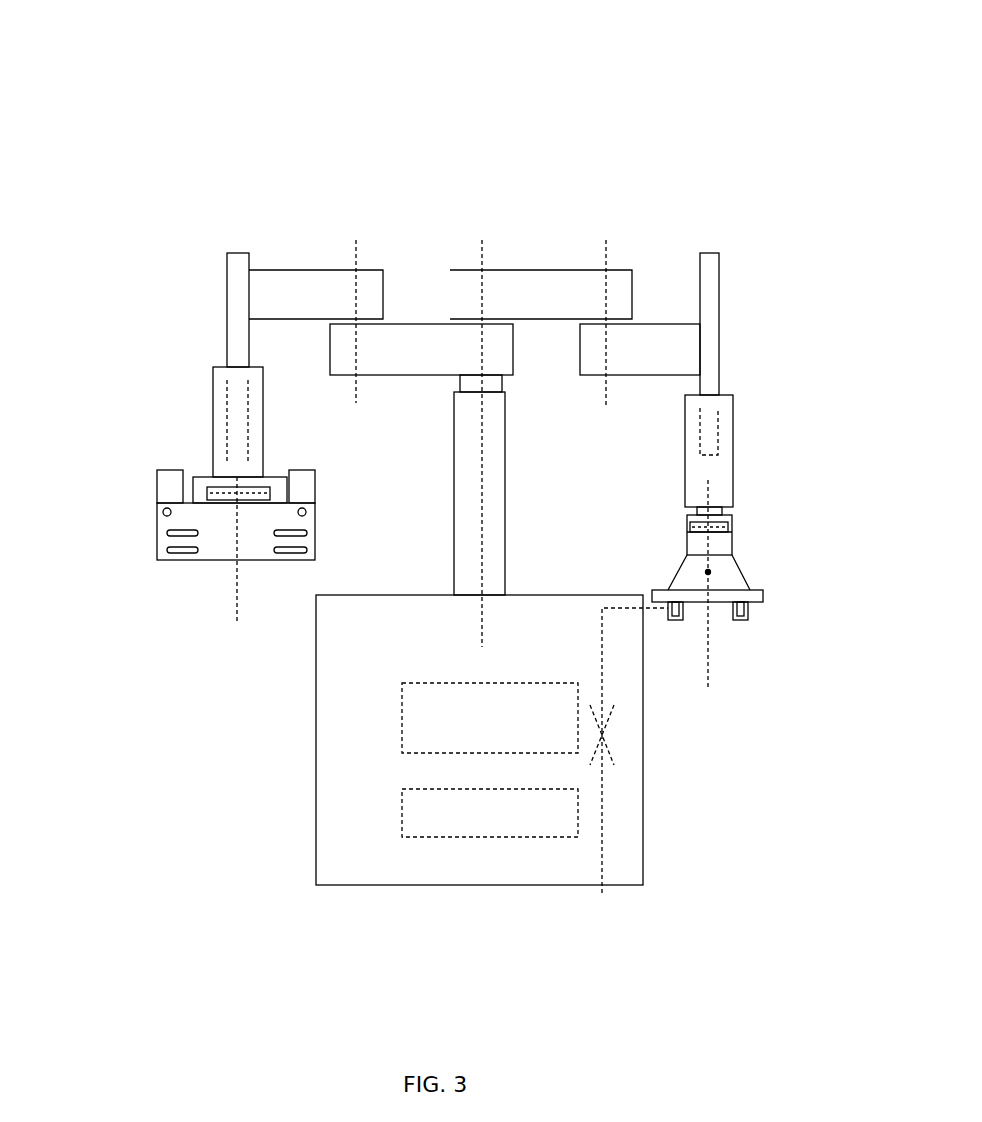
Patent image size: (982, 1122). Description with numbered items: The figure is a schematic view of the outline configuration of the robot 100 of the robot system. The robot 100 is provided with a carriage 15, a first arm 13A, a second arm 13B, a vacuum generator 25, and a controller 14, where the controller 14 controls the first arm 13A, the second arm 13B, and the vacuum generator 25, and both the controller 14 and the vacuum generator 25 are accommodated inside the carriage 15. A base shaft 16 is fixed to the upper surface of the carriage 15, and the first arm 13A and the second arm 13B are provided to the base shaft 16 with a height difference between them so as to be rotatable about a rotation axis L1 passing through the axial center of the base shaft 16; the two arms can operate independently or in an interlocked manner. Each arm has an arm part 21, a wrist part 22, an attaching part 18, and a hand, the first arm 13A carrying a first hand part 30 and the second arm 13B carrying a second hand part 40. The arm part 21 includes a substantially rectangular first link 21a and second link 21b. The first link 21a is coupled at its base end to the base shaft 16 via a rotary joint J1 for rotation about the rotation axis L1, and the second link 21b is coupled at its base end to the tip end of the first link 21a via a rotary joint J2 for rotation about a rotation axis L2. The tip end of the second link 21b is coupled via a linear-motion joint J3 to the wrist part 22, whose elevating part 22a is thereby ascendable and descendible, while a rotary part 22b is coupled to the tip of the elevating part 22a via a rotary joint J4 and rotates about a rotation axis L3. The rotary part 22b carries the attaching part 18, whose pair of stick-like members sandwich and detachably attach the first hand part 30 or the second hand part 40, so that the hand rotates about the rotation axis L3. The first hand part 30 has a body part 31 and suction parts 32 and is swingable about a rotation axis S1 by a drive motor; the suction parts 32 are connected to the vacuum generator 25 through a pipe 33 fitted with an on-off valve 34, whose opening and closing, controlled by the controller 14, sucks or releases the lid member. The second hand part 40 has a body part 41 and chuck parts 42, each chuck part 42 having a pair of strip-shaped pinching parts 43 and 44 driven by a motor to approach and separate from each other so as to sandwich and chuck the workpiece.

The robot 100 is at (517, 38).
The second arm 13B is at (298, 248).
The first arm 13A is at (540, 257).
The arm part 21 is at (478, 178).
The first link 21a is at (417, 337).
The second link 21b is at (372, 283).
The rotation axis L1 is at (482, 245).
The rotation axis L2 is at (356, 245).
The rotation axis L3 is at (232, 613).
The rotary joint J1 is at (500, 302).
The rotary joint J2 is at (332, 338).
The linear-motion joint J3 is at (227, 305).
The rotary joint J4 is at (275, 480).
The base shaft 16 is at (455, 393).
The carriage 15 is at (316, 662).
The controller 14 is at (402, 718).
The vacuum generator 25 is at (402, 812).
The pipe 33 is at (602, 885).
The on-off valve 34 is at (612, 750).
The attaching part 18 is at (265, 455).
The wrist part 22 is at (112, 365).
The elevating part 22a is at (213, 410).
The rotary part 22b is at (205, 478).
The second hand part 40 is at (135, 566).
The body part 41 is at (157, 503).
The chuck part 42 is at (90, 495).
The pinching part 43 is at (163, 533).
The pinching part 44 is at (163, 552).
The first hand part 30 is at (768, 620).
The body part 31 is at (668, 588).
The suction part 32 is at (675, 622).
The rotation axis S1 is at (713, 571).